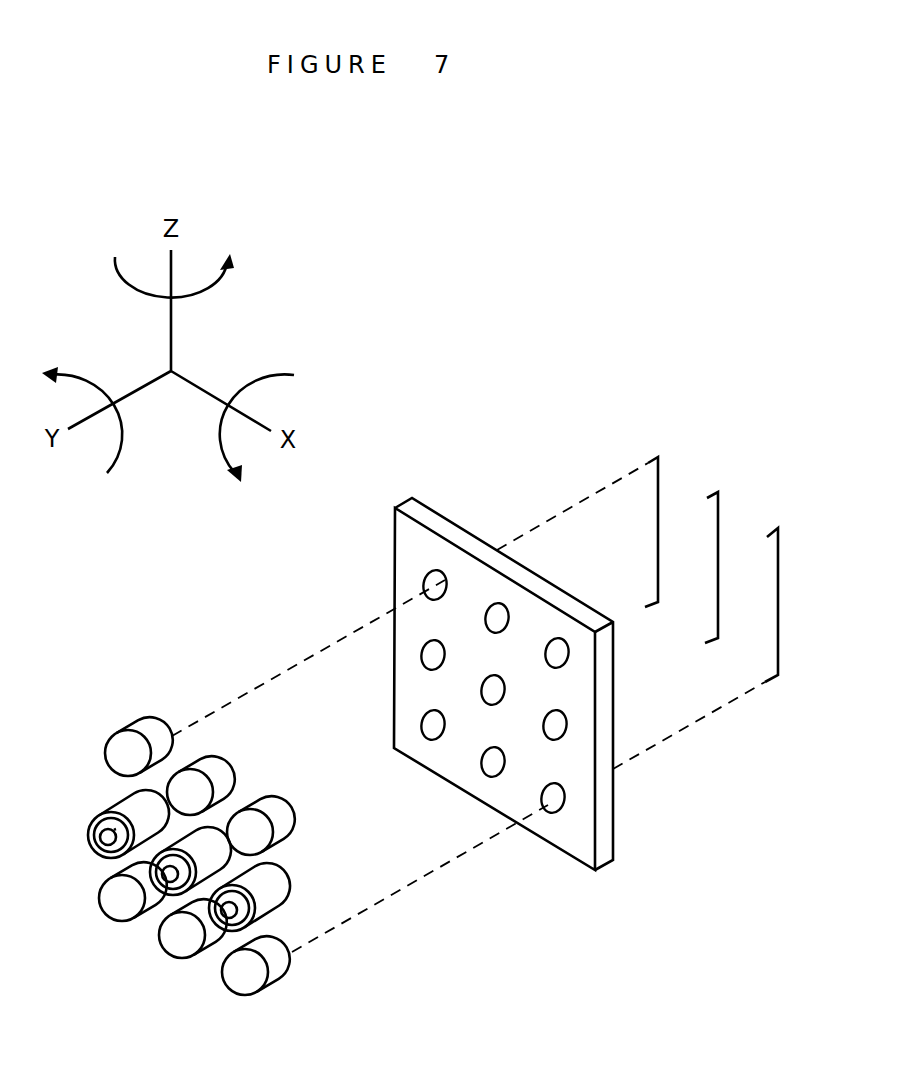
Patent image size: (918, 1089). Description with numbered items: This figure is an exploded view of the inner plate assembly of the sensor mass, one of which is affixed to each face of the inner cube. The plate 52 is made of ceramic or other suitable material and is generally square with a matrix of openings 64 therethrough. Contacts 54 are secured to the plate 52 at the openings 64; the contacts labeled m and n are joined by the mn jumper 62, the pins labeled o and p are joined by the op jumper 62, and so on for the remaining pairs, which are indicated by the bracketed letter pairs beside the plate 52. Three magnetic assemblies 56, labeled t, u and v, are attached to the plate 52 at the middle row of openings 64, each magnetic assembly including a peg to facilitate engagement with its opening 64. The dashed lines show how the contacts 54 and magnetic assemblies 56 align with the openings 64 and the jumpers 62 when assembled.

The plate 52 is at (603, 840).
The contacts 54 is at (147, 732).
The magnetic assemblies 56 is at (125, 807).
The jumper 62 is at (701, 561).
The openings 64 is at (556, 802).